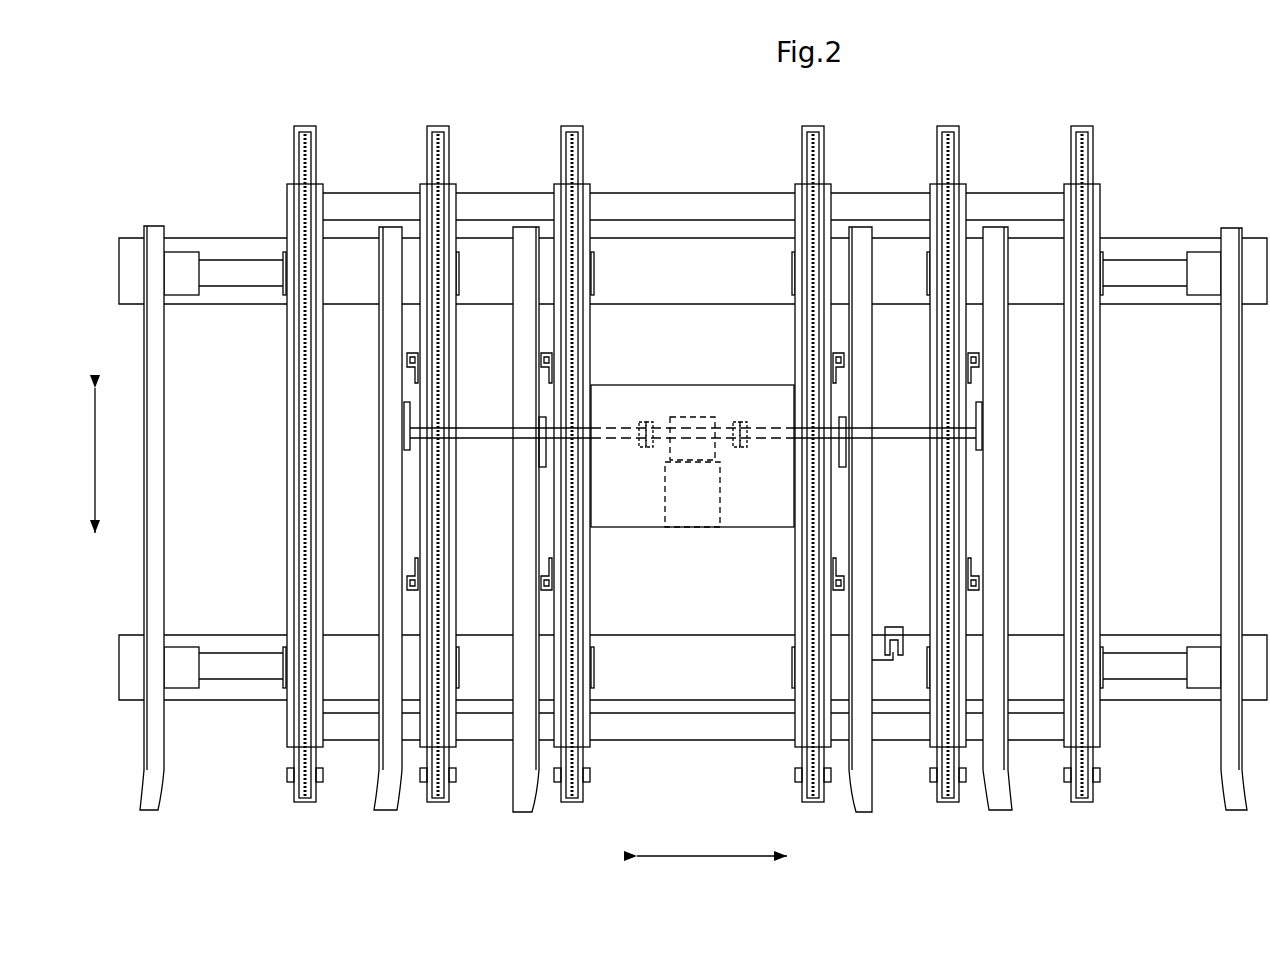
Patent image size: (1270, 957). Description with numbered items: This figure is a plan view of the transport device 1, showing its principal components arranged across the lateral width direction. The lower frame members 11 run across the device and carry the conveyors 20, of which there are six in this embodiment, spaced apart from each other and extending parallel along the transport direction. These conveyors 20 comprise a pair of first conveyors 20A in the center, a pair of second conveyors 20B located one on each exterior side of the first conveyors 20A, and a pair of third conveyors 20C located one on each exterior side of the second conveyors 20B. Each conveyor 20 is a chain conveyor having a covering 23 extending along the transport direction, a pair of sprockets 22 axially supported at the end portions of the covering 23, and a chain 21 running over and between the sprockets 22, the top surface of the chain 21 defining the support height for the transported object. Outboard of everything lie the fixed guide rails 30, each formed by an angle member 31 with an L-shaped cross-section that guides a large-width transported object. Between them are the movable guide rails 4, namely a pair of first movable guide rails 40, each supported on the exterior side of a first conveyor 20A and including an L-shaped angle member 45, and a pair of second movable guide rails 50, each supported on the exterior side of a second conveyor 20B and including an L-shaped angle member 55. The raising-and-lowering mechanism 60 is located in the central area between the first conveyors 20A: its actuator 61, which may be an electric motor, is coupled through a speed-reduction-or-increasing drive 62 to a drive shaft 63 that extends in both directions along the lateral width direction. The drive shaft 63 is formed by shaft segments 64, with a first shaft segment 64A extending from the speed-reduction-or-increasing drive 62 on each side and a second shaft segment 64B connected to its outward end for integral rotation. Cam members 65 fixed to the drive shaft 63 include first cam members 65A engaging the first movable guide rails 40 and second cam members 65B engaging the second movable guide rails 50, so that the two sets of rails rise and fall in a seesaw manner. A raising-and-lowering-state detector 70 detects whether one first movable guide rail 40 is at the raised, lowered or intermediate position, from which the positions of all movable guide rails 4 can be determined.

The transport device 1 is at (163, 200).
The lower frame member 11 is at (132, 262).
The conveyor 20 is at (687, 435).
The first conveyor 20A is at (797, 140).
The second conveyor 20B is at (421, 130).
The third conveyor 20C is at (286, 138).
The chain 21 is at (303, 360).
The sprocket 22 is at (302, 158).
The covering 23 is at (318, 552).
The fixed guide rail 30 is at (693, 548).
The angle member 31 is at (157, 507).
The movable guide rail 4 is at (694, 548).
The first movable guide rail 40 is at (518, 817).
The L-shaped angle member 45 is at (532, 555).
The second movable guide rail 50 is at (694, 548).
The L-shaped angle member 55 is at (390, 448).
The raising-and-lowering mechanism 60 is at (693, 464).
The actuator 61 is at (662, 505).
The speed-reduction-or-increasing drive 62 is at (716, 452).
The drive shaft 63 is at (696, 378).
The shaft segment 64 is at (696, 378).
The first shaft segment 64A is at (658, 427).
The second shaft segment 64B is at (607, 427).
The cam member 65 is at (689, 435).
The first cam member 65A is at (538, 453).
The second cam member 65B is at (1035, 388).
The raising-and-lowering-state detector 70 is at (899, 670).